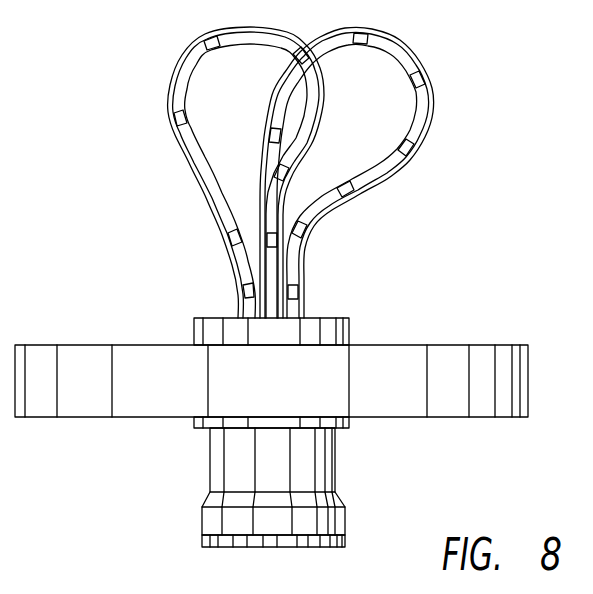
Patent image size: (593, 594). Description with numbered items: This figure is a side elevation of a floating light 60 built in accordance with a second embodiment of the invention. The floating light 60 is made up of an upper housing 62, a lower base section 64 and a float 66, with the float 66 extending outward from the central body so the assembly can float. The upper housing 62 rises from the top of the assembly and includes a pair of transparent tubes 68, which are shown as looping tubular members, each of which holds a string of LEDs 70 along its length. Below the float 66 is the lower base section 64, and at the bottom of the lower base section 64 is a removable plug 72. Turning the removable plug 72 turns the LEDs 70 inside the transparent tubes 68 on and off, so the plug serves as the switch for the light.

The floating light 60 is at (134, 467).
The upper housing 62 is at (325, 318).
The lower base section 64 is at (337, 448).
The float 66 is at (490, 344).
The transparent tubes 68 is at (425, 128).
The LEDs 70 is at (410, 158).
The removable plug 72 is at (202, 541).